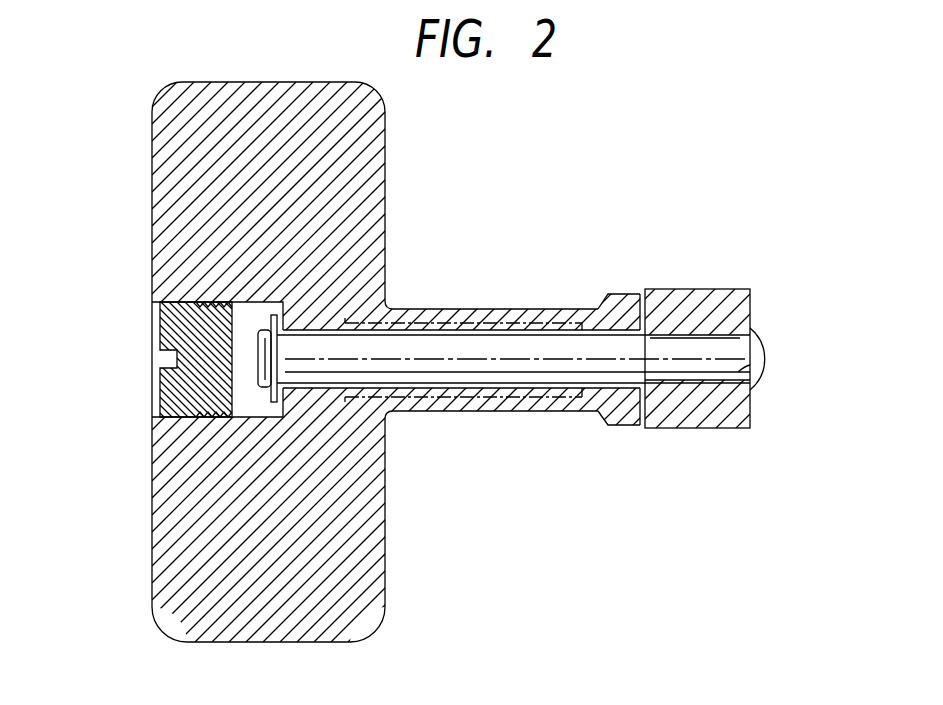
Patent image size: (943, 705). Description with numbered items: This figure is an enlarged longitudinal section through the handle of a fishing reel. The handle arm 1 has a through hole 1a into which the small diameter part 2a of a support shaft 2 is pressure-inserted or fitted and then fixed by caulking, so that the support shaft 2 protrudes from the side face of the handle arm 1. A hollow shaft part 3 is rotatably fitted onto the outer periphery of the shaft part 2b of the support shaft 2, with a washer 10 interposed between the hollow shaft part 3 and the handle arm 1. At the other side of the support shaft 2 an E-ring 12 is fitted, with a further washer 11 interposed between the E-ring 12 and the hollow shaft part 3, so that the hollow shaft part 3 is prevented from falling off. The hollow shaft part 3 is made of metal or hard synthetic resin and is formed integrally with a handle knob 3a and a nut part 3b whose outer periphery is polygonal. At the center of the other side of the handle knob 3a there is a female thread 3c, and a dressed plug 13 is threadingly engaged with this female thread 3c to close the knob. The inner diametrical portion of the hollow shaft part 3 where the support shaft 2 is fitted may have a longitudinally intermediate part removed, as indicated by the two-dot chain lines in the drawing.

The handle arm 1 is at (729, 283).
The through hole 1a is at (750, 366).
The support shaft 2 is at (250, 347).
The small diameter part 2a is at (732, 343).
The shaft part 2b is at (495, 328).
The hollow shaft part 3 is at (547, 301).
The handle knob 3a is at (158, 137).
The nut part 3b is at (622, 294).
The female thread 3c is at (160, 318).
The washer 10 is at (650, 393).
The washer 11 is at (280, 397).
The E-ring 12 is at (271, 400).
The dressed plug 13 is at (176, 379).